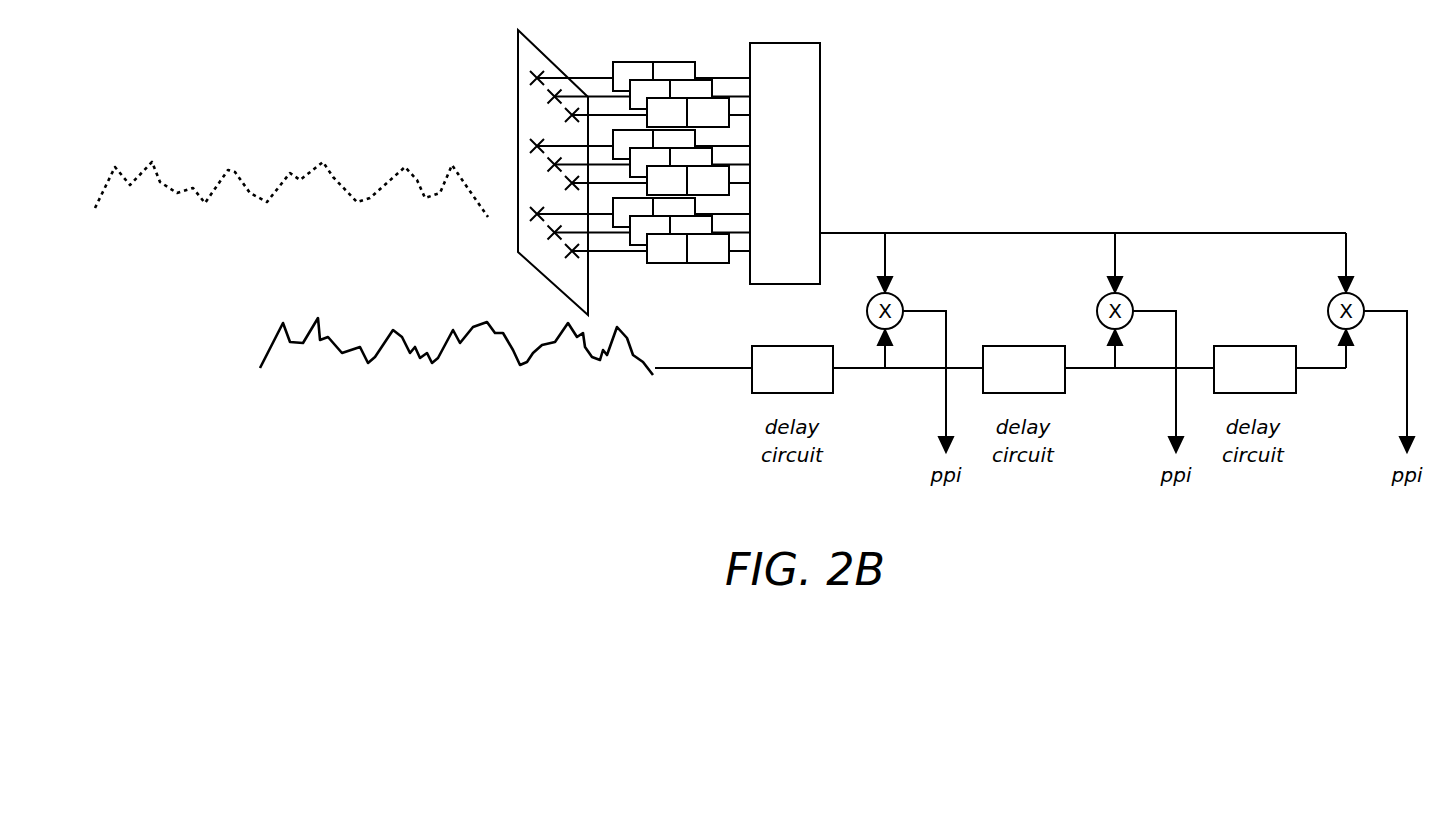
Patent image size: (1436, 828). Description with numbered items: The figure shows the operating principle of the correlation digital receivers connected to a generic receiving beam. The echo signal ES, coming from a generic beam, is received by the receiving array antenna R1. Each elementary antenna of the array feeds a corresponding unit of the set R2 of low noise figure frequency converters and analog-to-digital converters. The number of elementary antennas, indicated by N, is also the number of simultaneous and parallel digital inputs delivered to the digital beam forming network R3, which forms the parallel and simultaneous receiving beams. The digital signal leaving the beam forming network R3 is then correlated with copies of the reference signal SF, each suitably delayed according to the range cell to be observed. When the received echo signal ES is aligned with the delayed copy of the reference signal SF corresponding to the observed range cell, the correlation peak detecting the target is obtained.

The receiving array antenna R1 is at (538, 43).
The set of low noise figure frequency converters and analog-to-digital converters R2 is at (660, 267).
The digital beam forming network R3 is at (780, 42).
The number of elementary antennas N is at (730, 74).
The echo signal ES is at (235, 172).
The reference signal SF is at (437, 362).